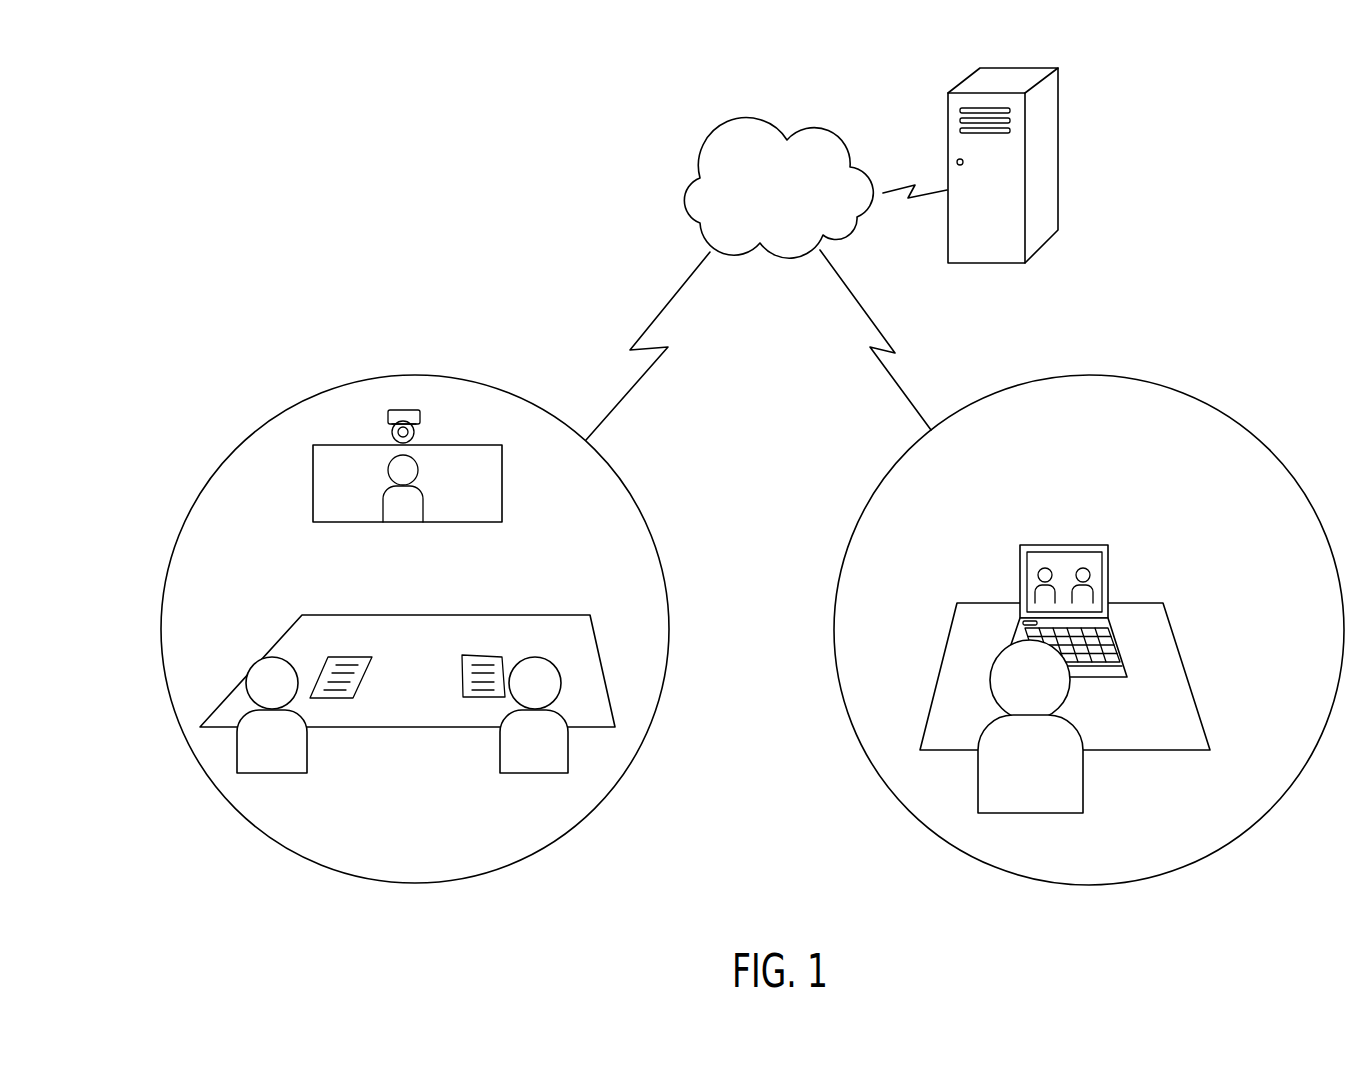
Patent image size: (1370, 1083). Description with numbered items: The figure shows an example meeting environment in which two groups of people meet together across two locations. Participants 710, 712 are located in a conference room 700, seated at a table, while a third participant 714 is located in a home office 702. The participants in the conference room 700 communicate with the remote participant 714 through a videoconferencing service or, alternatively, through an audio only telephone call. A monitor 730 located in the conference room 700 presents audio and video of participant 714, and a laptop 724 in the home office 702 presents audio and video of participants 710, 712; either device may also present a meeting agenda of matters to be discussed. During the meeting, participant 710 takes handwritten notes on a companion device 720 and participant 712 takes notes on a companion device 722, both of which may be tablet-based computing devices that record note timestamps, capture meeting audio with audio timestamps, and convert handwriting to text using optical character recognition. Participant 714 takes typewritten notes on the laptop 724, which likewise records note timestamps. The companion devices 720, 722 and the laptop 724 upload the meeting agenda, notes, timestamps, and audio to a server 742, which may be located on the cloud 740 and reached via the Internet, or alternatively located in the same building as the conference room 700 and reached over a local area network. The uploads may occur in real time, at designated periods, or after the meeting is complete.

The conference room 700 is at (398, 883).
The home office 702 is at (1145, 877).
The participant 710 is at (262, 775).
The participant 712 is at (542, 775).
The participant 714 is at (993, 815).
The companion device 720 is at (342, 655).
The companion device 722 is at (473, 653).
The laptop 724 is at (1043, 545).
The monitor 730 is at (452, 512).
The cloud 740 is at (750, 252).
The server 742 is at (997, 265).